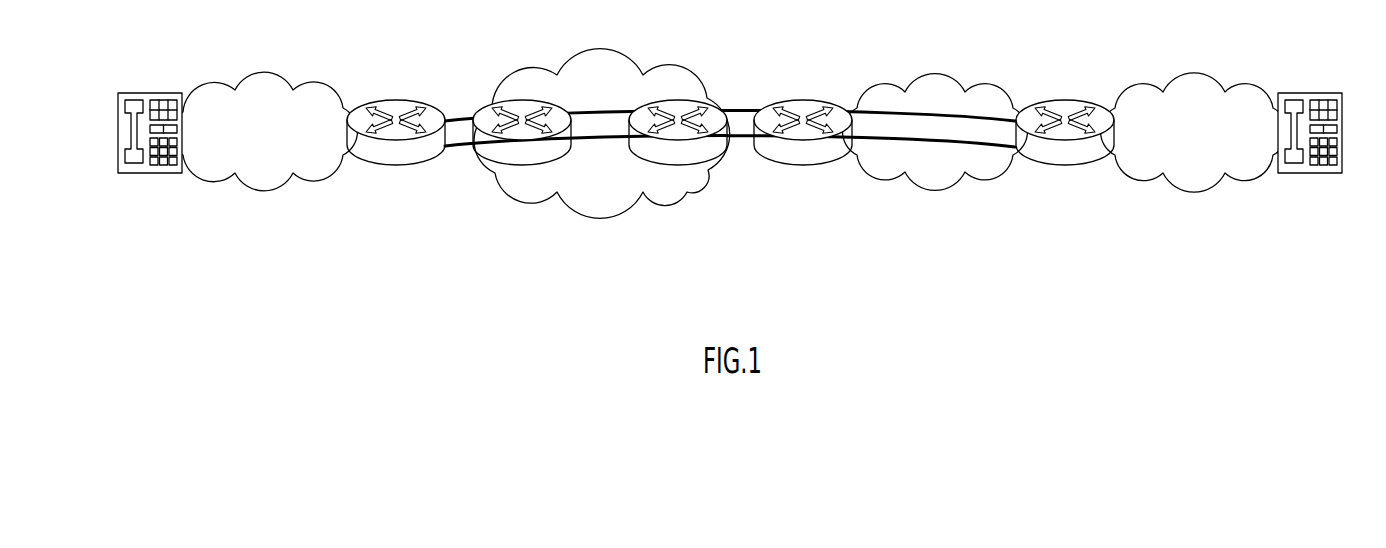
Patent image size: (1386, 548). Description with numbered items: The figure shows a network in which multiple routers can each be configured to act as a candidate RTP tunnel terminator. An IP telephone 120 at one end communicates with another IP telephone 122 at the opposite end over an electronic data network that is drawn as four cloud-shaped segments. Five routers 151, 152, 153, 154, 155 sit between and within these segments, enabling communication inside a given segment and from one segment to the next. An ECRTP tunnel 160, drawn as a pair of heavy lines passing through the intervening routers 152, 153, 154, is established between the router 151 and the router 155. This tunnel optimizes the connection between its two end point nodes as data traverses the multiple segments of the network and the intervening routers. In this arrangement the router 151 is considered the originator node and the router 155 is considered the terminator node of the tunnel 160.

The IP telephone 120 is at (152, 93).
The IP telephone 122 is at (1310, 93).
The router 151 is at (374, 163).
The router 152 is at (522, 165).
The router 153 is at (678, 165).
The router 154 is at (780, 165).
The router 155 is at (1063, 165).
The ECRTP tunnel 160 is at (746, 108).